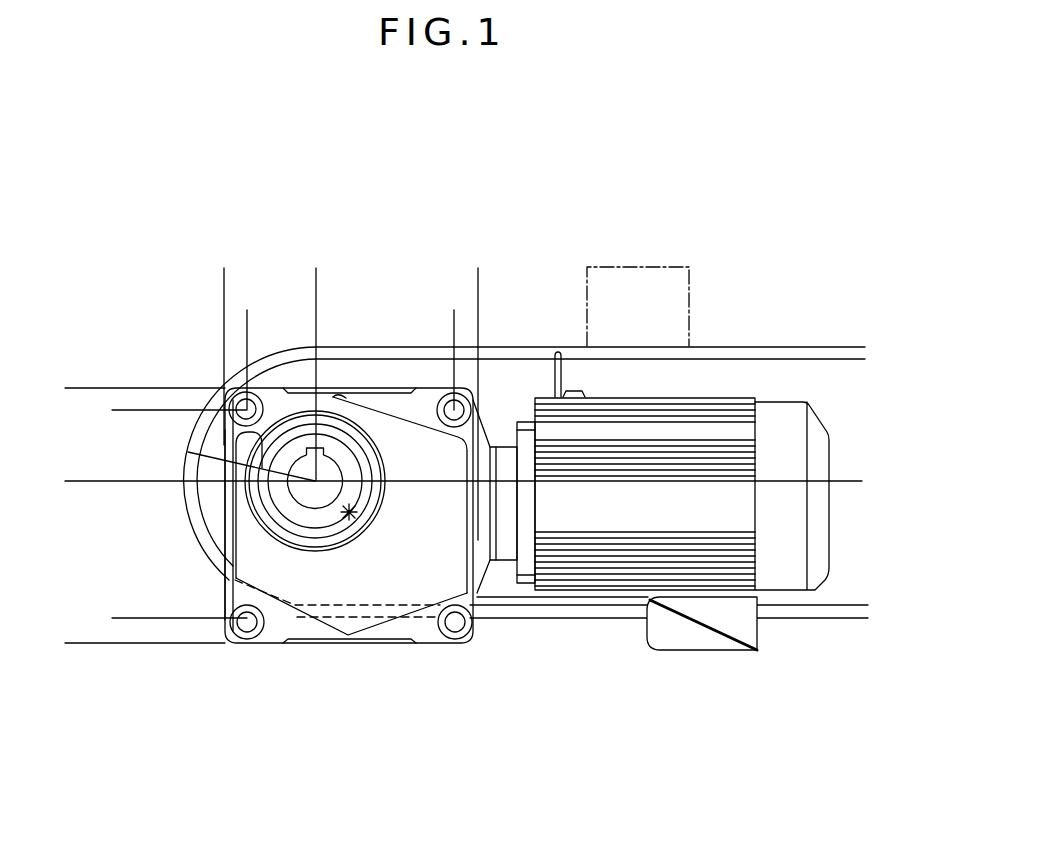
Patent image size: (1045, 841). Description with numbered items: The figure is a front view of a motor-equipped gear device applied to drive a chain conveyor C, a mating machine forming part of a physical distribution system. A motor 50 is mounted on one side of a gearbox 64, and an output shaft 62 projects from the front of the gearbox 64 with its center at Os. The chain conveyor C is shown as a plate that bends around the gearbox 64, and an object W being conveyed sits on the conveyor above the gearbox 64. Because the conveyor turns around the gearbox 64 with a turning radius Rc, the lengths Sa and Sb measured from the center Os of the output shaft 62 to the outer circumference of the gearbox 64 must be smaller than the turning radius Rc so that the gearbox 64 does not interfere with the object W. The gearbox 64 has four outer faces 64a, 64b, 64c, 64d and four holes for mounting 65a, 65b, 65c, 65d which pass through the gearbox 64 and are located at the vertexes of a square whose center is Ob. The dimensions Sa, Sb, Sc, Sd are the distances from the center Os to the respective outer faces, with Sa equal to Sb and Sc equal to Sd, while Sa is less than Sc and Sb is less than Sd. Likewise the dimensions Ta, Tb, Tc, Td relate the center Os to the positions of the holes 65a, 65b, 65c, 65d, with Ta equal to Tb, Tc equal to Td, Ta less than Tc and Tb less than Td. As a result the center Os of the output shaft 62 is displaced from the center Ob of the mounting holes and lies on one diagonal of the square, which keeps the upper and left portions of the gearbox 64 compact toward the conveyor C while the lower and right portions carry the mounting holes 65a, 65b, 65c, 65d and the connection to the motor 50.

The motor 50 is at (717, 430).
The output shaft 62 is at (327, 520).
The gearbox 64 is at (418, 690).
The outer face of the gearbox 64a is at (330, 393).
The outer face of the gearbox 64b is at (222, 533).
The outer face of the gearbox 64c is at (275, 650).
The outer face of the gearbox 64d is at (478, 599).
The hole for mounting 65a is at (240, 400).
The hole for mounting 65b is at (242, 633).
The hole for mounting 65c is at (457, 640).
The hole for mounting 65d is at (470, 410).
The chain conveyor C is at (497, 343).
The object being conveyed W is at (660, 265).
The center of the output shaft Os is at (315, 481).
The center of the holes for mounting Ob is at (355, 518).
The turning radius of the chain conveyor Rc is at (188, 452).
The length from output shaft center to gearbox outer circumference Sa is at (77, 388).
The length from output shaft center to gearbox outer circumference Sb is at (316, 278).
The length from output shaft center to gearbox outer circumference Sc is at (77, 481).
The length from output shaft center to gearbox outer circumference Sd is at (478, 278).
The distance from output shaft center to mounting hole Ta is at (123, 410).
The distance from output shaft center to mounting hole Tb is at (316, 322).
The distance from output shaft center to mounting hole Tc is at (123, 481).
The distance from output shaft center to mounting hole Td is at (454, 322).